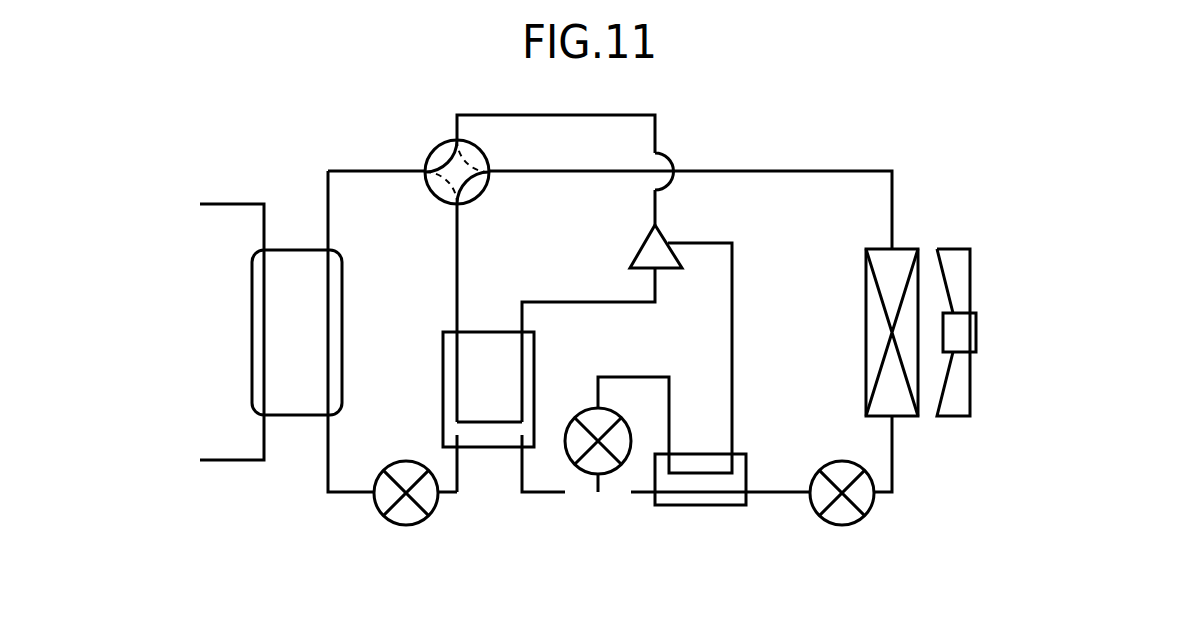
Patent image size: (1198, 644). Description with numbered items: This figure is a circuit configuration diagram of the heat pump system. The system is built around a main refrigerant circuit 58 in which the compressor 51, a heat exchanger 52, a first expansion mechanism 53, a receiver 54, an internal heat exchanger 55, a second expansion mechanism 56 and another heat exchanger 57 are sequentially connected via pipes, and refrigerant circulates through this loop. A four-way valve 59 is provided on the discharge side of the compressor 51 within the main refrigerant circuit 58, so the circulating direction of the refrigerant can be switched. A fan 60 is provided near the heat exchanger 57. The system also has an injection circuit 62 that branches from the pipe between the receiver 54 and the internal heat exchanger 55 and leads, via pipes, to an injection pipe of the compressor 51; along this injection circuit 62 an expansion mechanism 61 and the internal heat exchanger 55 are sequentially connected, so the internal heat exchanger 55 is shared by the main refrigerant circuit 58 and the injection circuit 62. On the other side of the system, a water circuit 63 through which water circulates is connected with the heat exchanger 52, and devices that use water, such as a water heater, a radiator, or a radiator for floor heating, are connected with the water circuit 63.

The compressor 51 is at (640, 247).
The heat exchanger 52 is at (342, 258).
The expansion mechanism 53 is at (383, 511).
The receiver 54 is at (443, 390).
The internal heat exchanger 55 is at (702, 505).
The expansion mechanism 56 is at (814, 507).
The heat exchanger 57 is at (905, 249).
The main refrigerant circuit 58 is at (813, 171).
The four-way valve 59 is at (432, 150).
The fan 60 is at (955, 416).
The expansion mechanism 61 is at (583, 418).
The injection circuit 62 is at (732, 345).
The water circuit 63 is at (230, 204).